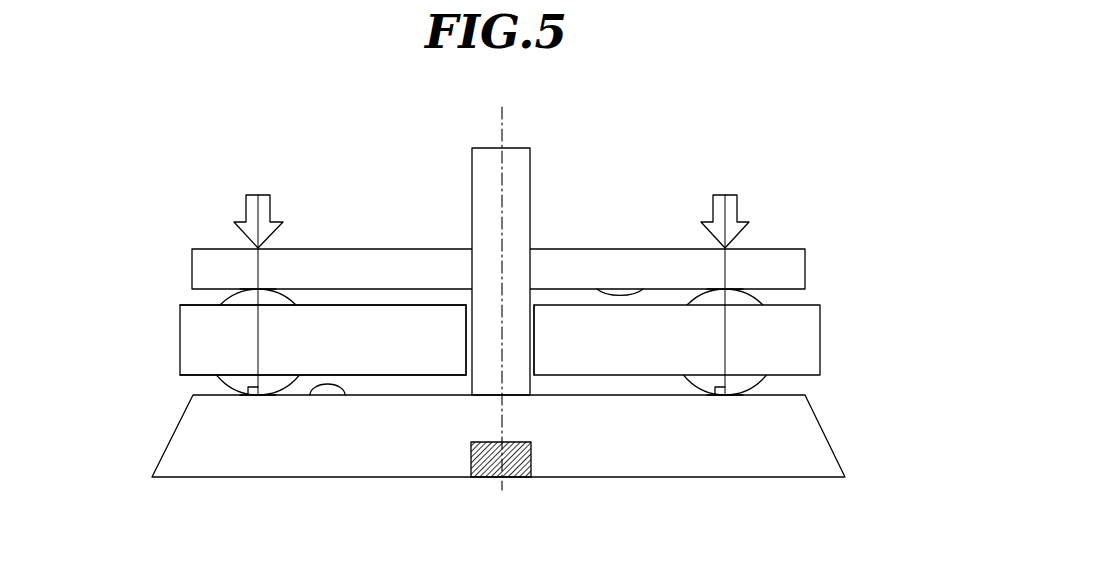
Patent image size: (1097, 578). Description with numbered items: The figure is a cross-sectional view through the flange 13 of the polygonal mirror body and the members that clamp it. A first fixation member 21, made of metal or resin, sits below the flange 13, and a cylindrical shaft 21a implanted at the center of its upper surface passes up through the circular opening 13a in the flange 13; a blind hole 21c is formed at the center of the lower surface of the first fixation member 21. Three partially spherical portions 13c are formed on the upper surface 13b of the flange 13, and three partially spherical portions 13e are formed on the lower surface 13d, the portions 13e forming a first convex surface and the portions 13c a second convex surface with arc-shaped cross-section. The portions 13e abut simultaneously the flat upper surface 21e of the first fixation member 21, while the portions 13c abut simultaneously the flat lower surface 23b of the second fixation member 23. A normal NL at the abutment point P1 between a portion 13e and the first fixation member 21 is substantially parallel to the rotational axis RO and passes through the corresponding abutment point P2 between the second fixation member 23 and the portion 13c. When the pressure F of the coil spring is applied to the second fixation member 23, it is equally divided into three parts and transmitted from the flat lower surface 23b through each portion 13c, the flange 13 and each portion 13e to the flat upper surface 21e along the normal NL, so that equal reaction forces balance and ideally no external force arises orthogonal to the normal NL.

The flange 13 is at (805, 342).
The circular opening 13a is at (472, 318).
The upper surface 13b is at (358, 305).
The partially spherical portion 13c is at (230, 297).
The lower surface 13d is at (387, 376).
The partially spherical portion 13e is at (222, 380).
The first fixation member 21 is at (662, 478).
The cylindrical shaft 21a is at (528, 148).
The blind hole 21c is at (485, 479).
The flat upper surface 21e is at (310, 395).
The second fixation member 23 is at (190, 249).
The flat lower surface 23b is at (645, 289).
The rotational axis RO is at (498, 127).
The normal NL is at (278, 228).
The pressure F is at (491, 208).
The abutment point P1 is at (258, 395).
The abutment point P2 is at (258, 289).